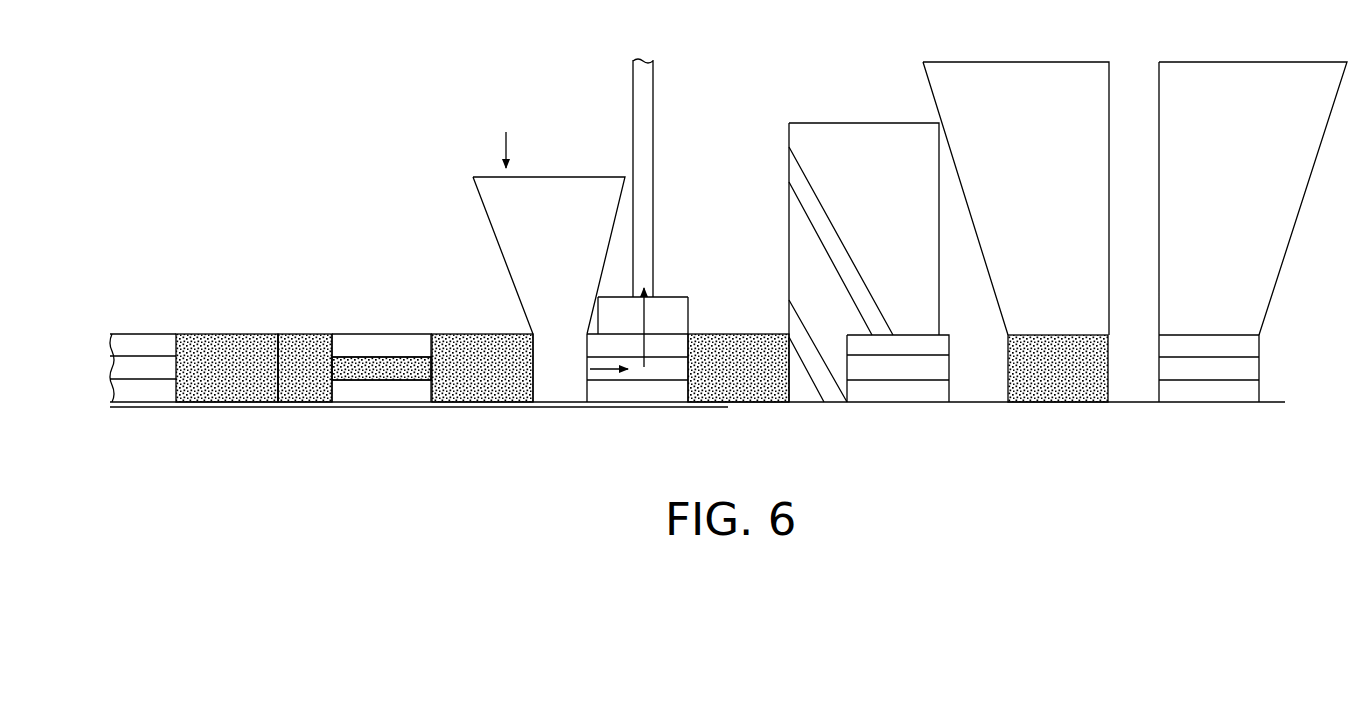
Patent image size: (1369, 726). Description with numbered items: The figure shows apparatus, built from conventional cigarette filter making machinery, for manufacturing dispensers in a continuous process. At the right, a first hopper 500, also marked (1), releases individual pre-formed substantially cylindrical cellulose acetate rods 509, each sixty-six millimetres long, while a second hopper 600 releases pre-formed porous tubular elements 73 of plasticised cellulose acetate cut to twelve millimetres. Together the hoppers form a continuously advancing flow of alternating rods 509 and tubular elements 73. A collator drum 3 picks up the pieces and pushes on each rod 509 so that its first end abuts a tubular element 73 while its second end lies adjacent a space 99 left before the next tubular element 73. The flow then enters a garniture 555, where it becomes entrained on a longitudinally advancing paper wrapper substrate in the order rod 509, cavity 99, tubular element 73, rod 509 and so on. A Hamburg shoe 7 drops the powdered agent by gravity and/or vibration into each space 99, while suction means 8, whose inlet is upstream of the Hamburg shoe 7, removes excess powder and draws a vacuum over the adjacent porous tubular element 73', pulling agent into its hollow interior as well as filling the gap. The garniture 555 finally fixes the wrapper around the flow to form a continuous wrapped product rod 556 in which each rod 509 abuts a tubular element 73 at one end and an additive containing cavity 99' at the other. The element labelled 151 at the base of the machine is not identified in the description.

The rod 509 is at (212, 340).
The continuous wrapped product rod 556 is at (267, 325).
The additive containing cavity 99' is at (300, 345).
The tubular element 73 is at (822, 371).
The tubular element adjacent the space 73' is at (682, 349).
The space 99 is at (753, 304).
The conveyor 151 is at (540, 418).
The garniture 555 is at (644, 418).
The first hopper 500 is at (1023, 62).
The second hopper 600 is at (1248, 62).
The Hamburg shoe 7 is at (549, 267).
The suction means 8 is at (637, 214).
The collator drum 3 is at (863, 173).
The first hopper 1 is at (1035, 171).